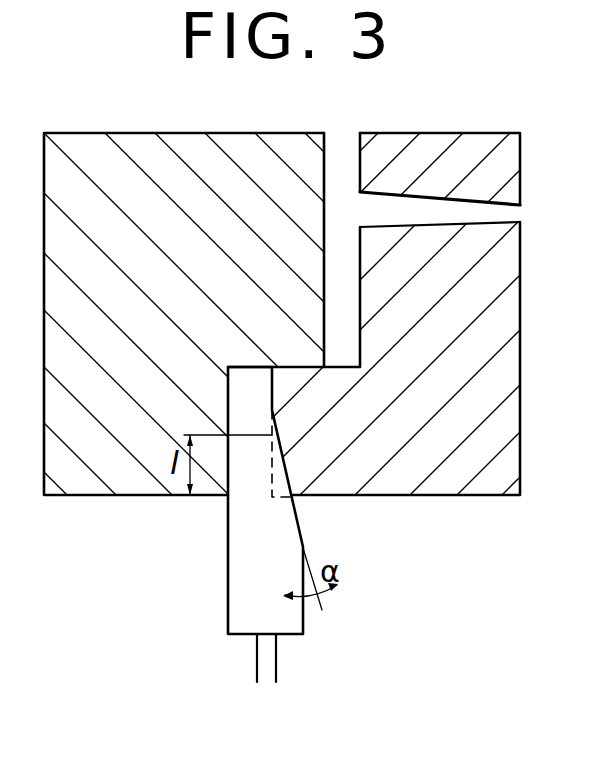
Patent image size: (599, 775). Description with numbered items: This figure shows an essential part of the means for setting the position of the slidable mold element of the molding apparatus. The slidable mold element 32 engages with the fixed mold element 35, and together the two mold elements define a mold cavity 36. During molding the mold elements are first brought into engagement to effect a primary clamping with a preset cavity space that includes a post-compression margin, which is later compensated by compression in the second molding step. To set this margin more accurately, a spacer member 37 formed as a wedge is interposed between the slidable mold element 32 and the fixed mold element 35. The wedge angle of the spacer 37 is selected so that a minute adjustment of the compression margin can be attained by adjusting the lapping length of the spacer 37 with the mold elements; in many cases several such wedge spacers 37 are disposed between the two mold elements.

The slidable mold element 32 is at (119, 467).
The fixed mold element 35 is at (427, 472).
The mold cavity 36 is at (338, 163).
The wedge spacer 37 is at (236, 568).